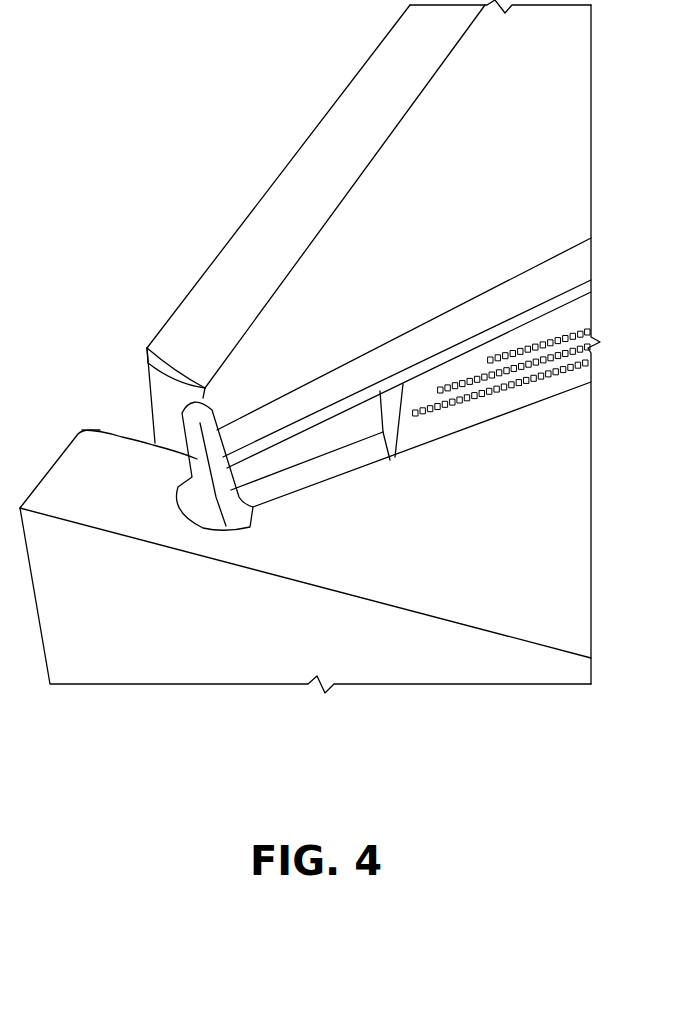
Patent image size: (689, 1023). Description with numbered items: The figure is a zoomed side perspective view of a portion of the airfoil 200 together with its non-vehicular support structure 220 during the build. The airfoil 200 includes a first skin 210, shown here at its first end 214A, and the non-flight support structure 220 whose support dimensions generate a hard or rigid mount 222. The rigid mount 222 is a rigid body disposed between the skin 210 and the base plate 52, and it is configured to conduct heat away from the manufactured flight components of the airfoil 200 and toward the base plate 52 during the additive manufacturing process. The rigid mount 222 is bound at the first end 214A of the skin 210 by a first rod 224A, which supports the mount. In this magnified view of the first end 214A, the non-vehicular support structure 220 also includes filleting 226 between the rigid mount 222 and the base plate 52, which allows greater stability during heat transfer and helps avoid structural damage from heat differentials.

The airfoil 200 is at (304, 276).
The first skin 210 is at (325, 288).
The first end 214A is at (147, 365).
The first rod 224A is at (150, 447).
The filleting 226 is at (227, 520).
The non-flight support structure 220 is at (417, 406).
The rigid mount 222 is at (505, 452).
The base plate 52 is at (395, 583).